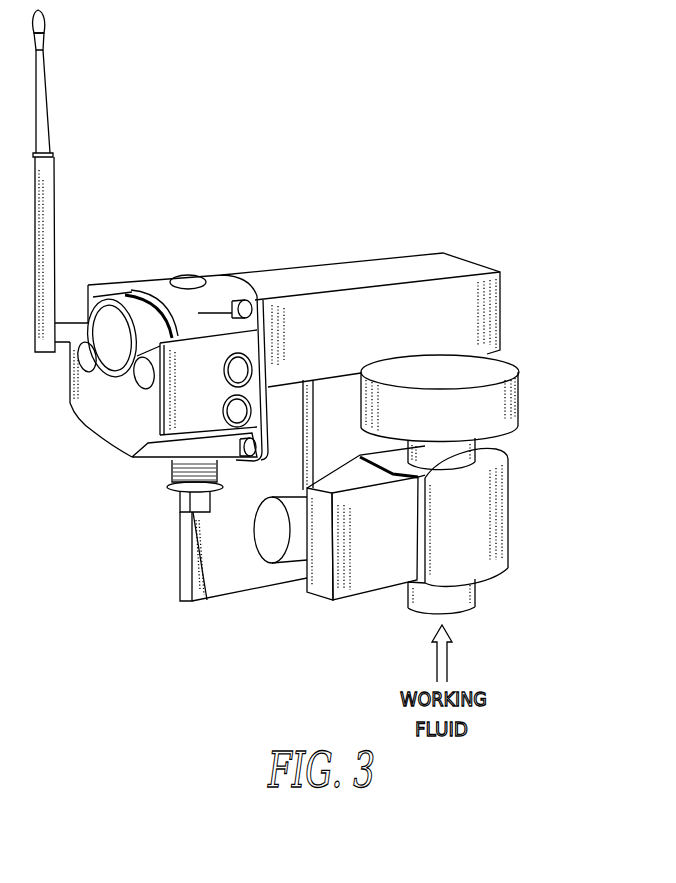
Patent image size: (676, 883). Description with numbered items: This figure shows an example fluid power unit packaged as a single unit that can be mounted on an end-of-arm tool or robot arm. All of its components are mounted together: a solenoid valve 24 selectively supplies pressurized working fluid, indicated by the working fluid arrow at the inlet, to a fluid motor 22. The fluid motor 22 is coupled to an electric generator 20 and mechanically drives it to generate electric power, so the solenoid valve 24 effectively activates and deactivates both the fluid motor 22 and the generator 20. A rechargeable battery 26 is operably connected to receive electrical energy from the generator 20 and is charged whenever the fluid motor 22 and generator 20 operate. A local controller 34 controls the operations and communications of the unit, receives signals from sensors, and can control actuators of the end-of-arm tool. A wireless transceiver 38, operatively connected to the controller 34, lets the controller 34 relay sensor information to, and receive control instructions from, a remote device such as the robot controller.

The electric generator 20 is at (519, 408).
The fluid motor 22 is at (493, 518).
The solenoid valve 24 is at (357, 587).
The rechargeable battery 26 is at (260, 490).
The controller 34 is at (388, 265).
The wireless transceiver 38 is at (182, 330).